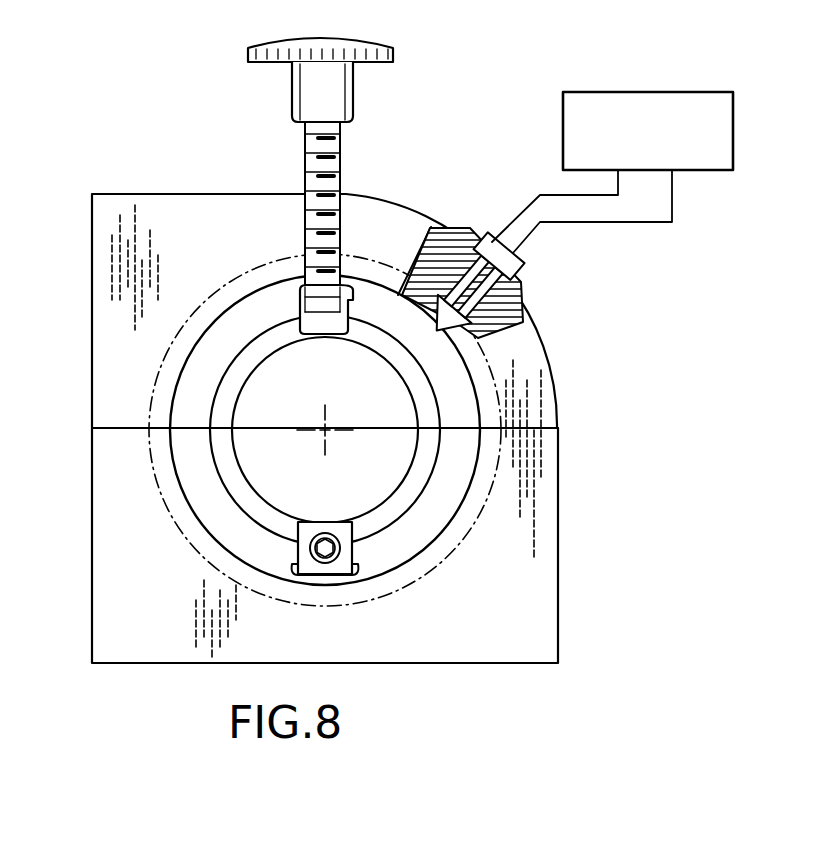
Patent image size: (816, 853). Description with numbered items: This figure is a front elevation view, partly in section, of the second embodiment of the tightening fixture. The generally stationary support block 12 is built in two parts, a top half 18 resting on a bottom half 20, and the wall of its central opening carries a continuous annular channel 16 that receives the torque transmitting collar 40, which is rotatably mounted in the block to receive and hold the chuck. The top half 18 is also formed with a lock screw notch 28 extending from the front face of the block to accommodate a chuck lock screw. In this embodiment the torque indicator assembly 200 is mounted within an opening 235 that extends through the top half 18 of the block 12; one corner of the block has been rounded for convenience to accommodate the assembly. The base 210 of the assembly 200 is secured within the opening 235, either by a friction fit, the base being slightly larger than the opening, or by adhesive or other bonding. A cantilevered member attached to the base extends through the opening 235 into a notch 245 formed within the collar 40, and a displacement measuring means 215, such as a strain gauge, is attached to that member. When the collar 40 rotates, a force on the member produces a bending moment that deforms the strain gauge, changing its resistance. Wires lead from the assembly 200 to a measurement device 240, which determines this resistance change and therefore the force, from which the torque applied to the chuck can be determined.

The support block 12 is at (125, 533).
The annular channel 16 is at (225, 576).
The top half 18 is at (120, 262).
The bottom half 20 is at (524, 630).
The lock screw notch 28 is at (375, 202).
The torque transmitting collar 40 is at (412, 535).
The torque indicator assembly 200 is at (479, 255).
The base 210 is at (465, 232).
The displacement measuring means 215 is at (452, 232).
The opening 235 is at (480, 238).
The measurement device 240 is at (593, 92).
The notch 245 is at (427, 320).